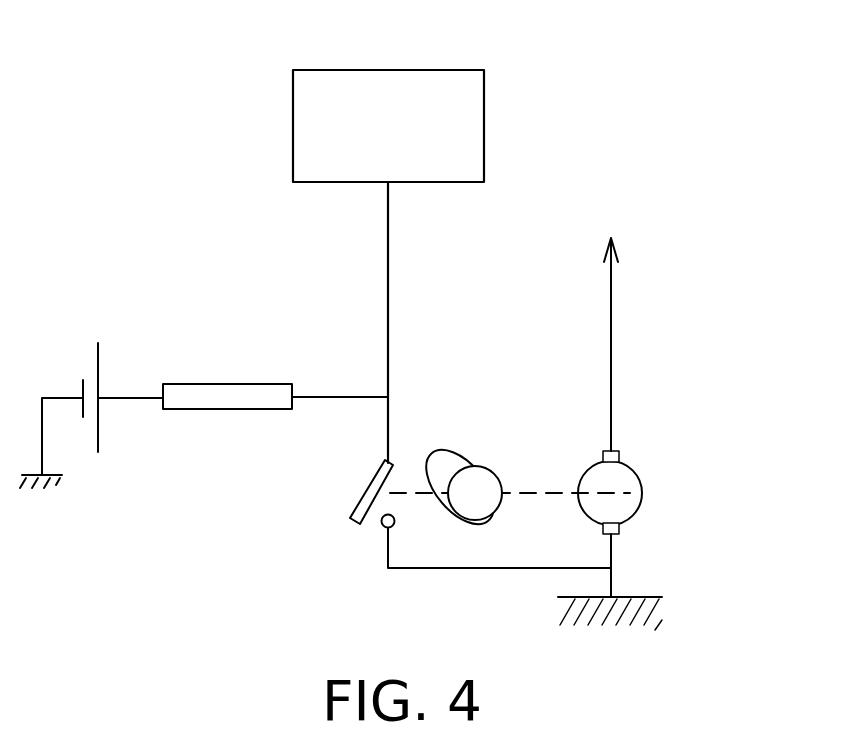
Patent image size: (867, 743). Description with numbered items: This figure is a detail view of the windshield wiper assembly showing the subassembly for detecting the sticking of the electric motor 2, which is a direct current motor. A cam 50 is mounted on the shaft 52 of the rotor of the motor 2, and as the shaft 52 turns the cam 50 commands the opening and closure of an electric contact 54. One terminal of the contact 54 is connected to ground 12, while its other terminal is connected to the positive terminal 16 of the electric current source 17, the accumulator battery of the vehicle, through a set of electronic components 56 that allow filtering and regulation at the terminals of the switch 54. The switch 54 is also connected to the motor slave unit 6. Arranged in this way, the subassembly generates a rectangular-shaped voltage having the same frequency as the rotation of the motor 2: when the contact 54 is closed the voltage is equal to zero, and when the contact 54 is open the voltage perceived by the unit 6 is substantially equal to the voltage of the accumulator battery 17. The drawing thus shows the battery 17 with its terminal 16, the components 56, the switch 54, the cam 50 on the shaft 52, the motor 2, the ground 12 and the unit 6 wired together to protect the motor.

The motor slave unit 6 is at (375, 69).
The electric current source 17 is at (75, 379).
The terminal 16 is at (118, 396).
The set of electronic components 56 is at (213, 383).
The electric contact 54 is at (366, 492).
The cam 50 is at (486, 467).
The shaft 52 is at (543, 492).
The electric motor 2 is at (636, 470).
The ground 12 is at (650, 615).